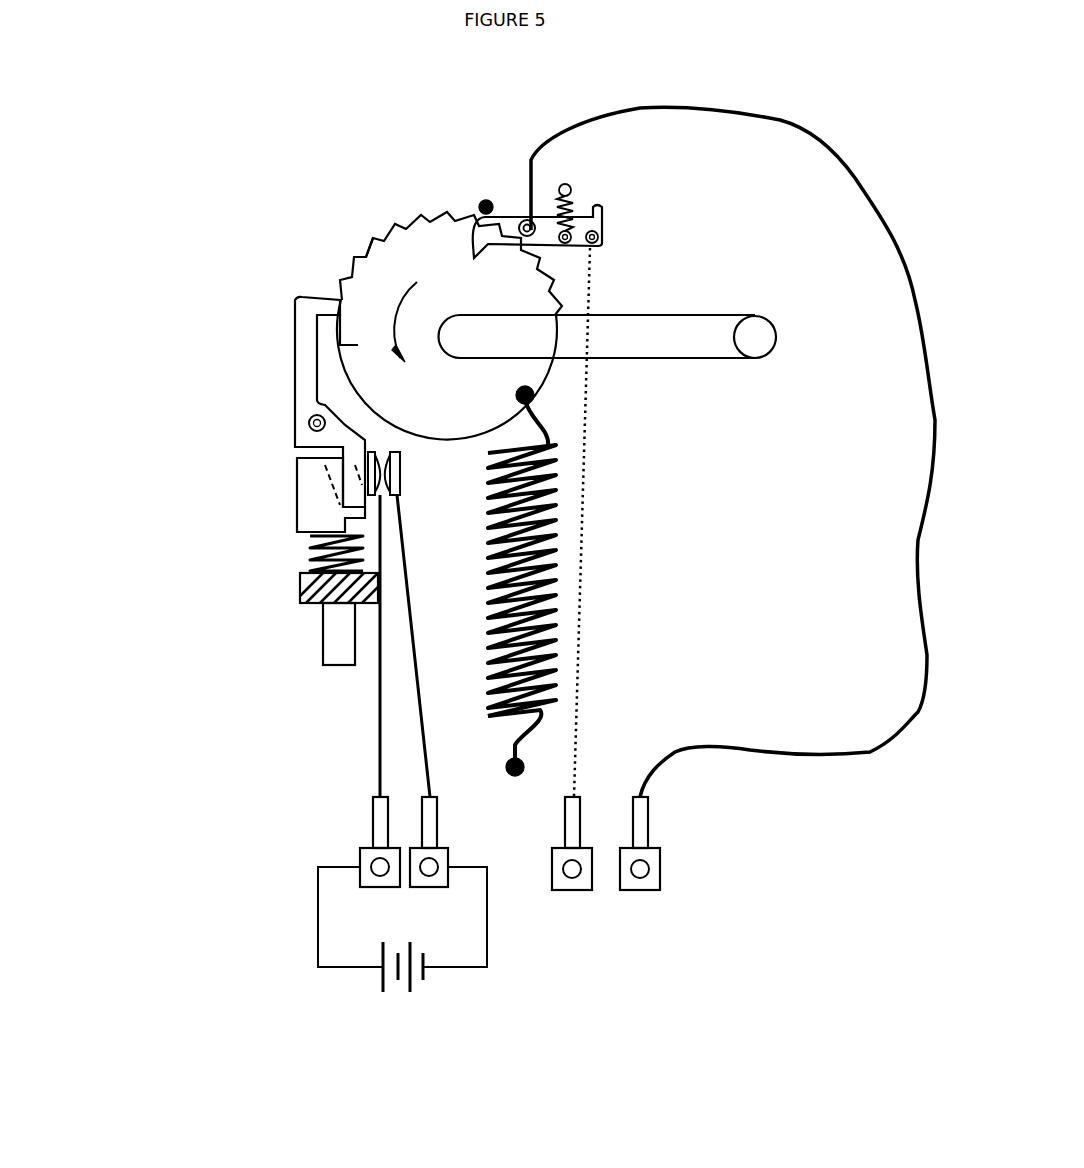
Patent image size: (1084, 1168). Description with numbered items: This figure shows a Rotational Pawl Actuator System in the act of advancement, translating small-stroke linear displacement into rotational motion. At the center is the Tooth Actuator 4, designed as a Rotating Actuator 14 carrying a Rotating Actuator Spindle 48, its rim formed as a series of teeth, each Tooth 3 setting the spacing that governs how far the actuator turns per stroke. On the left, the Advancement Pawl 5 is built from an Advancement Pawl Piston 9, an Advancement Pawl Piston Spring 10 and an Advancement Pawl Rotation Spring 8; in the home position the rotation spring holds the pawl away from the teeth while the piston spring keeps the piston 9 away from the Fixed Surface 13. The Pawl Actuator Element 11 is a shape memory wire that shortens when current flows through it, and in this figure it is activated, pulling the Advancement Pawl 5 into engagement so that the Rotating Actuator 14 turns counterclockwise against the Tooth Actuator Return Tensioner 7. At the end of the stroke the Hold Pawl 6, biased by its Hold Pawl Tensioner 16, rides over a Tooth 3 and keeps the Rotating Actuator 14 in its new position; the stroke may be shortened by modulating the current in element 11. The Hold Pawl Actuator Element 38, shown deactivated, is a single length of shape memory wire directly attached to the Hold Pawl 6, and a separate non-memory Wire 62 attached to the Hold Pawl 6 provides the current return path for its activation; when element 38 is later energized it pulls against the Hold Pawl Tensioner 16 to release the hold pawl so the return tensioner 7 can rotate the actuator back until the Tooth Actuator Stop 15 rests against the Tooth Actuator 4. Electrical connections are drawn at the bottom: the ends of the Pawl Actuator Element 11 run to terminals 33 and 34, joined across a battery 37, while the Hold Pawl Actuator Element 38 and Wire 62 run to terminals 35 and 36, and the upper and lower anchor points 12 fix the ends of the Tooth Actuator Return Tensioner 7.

The tooth 3 is at (345, 283).
The tooth actuator 4 is at (378, 266).
The advancement pawl 5 is at (300, 344).
The hold pawl 6 is at (519, 214).
The tooth actuator return tensioner 7 is at (548, 583).
The advancement pawl rotation spring 8 is at (300, 484).
The advancement pawl piston 9 is at (314, 503).
The advancement pawl piston spring 10 is at (310, 546).
The pawl actuator element 11 is at (378, 748).
The Anchor Point 12 is at (509, 612).
The fixed surface 13 is at (305, 602).
The rotating actuator 14 is at (447, 361).
The tooth actuator stop 15 is at (478, 205).
The hold pawl tensioner 16 is at (582, 197).
The Terminal N1+ 33 is at (357, 860).
The Terminal N1- 34 is at (451, 863).
The Terminal N2+ 35 is at (552, 870).
The Terminal N2- 36 is at (660, 870).
The Battery 37 is at (383, 967).
The hold pawl actuator element 38 is at (578, 753).
The rotating actuator spindle 48 is at (795, 325).
The wire 62 is at (920, 417).